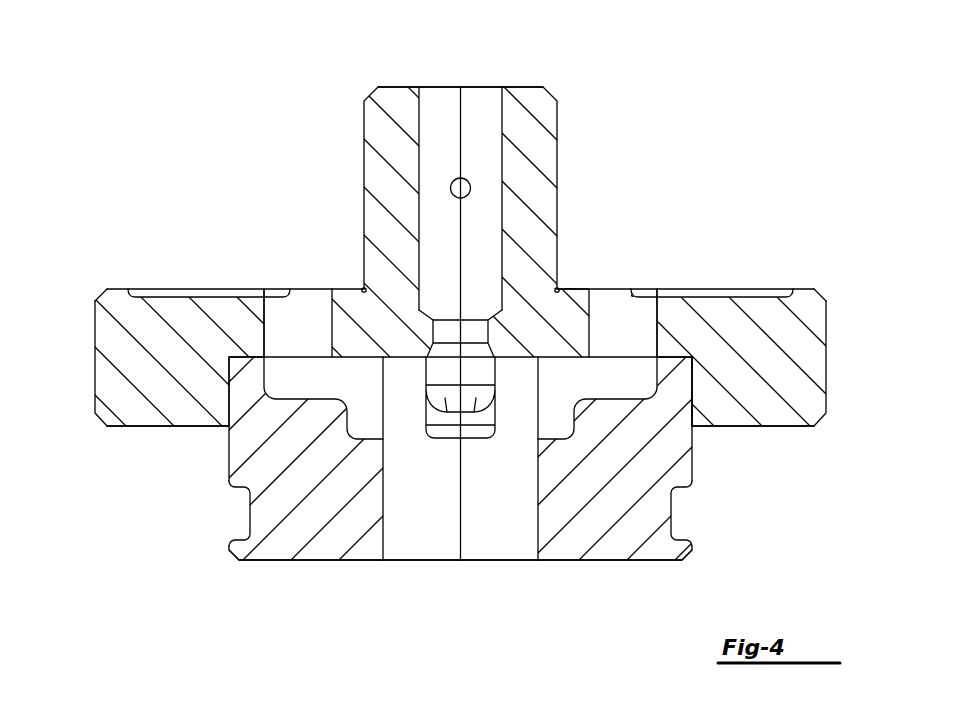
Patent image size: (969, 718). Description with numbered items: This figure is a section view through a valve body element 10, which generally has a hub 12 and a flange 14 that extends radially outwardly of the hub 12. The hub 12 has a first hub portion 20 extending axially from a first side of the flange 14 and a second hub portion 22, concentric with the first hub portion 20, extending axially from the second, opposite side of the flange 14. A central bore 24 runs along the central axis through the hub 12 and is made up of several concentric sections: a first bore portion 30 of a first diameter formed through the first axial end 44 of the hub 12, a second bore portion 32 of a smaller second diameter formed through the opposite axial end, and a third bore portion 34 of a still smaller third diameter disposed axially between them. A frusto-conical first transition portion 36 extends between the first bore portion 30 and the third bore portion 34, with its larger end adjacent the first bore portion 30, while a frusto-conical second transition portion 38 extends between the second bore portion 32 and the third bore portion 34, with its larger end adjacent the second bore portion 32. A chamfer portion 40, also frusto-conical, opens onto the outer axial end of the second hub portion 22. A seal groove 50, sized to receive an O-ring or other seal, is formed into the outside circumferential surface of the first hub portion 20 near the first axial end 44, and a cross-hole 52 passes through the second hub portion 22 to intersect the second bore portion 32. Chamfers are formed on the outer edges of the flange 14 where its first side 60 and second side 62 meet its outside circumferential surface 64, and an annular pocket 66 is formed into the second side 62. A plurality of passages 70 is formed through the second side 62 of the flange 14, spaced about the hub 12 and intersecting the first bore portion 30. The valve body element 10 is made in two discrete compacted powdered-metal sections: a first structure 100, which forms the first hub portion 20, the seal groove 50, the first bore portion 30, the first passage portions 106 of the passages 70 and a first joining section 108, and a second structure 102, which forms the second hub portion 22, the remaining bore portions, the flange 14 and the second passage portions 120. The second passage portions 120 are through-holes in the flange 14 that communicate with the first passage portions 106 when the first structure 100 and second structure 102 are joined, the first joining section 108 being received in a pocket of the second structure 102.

The valve body element 10 is at (635, 73).
The hub 12 is at (648, 545).
The flange 14 is at (142, 370).
The first hub portion 20 is at (653, 455).
The second hub portion 22 is at (538, 148).
The central bore 24 is at (417, 525).
The first bore portion 30 is at (492, 488).
The second bore portion 32 is at (437, 118).
The third bore portion 34 is at (443, 330).
The first transition portion 36 is at (447, 352).
The second transition portion 38 is at (473, 312).
The chamfer portion 40 is at (437, 87).
The first axial end 44 is at (313, 560).
The seal groove 50 is at (240, 514).
The cross-hole 52 is at (450, 188).
The first side of the flange 60 is at (152, 427).
The second side of the flange 62 is at (117, 289).
The outside circumferential surface of the flange 64 is at (828, 330).
The annular pocket 66 is at (747, 296).
The passages 70 is at (298, 327).
The first structure 100 is at (648, 509).
The second structure 102 is at (775, 380).
The first passage portions 106 is at (553, 397).
The first joining section 108 is at (692, 392).
The second passage portions 120 is at (622, 327).